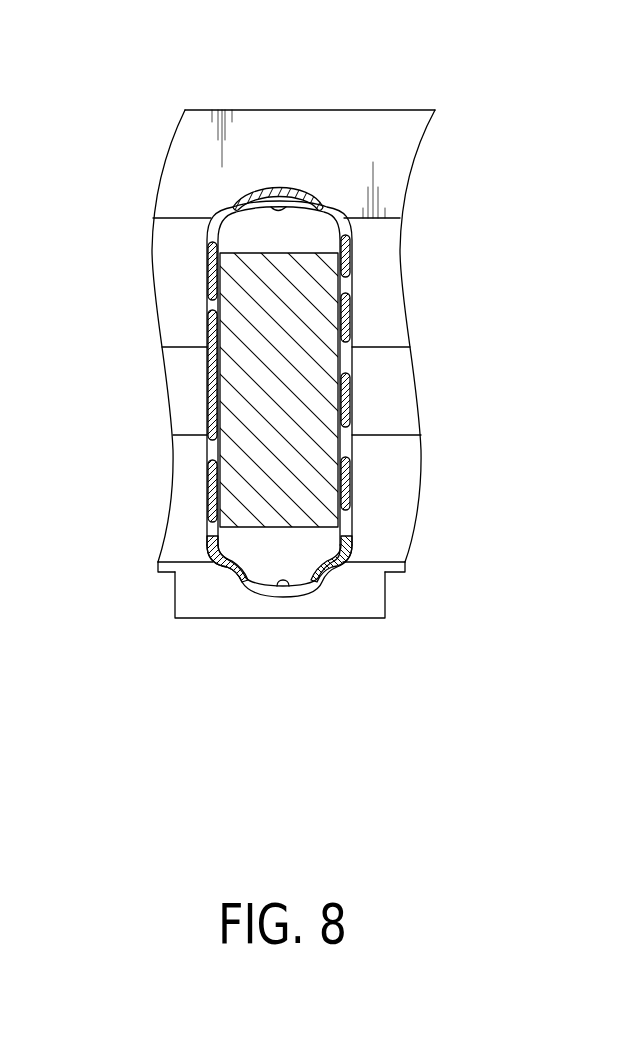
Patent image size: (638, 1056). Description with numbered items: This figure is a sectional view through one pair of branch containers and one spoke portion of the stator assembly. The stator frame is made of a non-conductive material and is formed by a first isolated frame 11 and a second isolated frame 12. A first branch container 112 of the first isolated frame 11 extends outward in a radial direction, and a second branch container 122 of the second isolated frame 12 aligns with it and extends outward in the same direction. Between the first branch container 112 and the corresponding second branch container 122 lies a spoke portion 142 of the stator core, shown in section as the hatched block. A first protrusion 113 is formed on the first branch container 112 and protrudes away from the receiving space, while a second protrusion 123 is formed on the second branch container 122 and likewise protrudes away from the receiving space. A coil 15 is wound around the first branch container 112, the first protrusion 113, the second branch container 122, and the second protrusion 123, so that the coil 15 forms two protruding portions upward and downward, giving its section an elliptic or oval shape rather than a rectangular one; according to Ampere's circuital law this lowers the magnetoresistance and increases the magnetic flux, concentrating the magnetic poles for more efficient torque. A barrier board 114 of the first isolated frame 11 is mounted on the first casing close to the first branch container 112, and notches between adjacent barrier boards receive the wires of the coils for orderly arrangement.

The first isolated frame 11 is at (404, 625).
The second isolated frame 12 is at (118, 66).
The coil 15 is at (350, 396).
The first branch container 112 is at (219, 475).
The first protrusion 113 is at (283, 579).
The barrier board 114 is at (208, 612).
The second branch container 122 is at (349, 286).
The second protrusion 123 is at (293, 205).
The spoke portion 142 is at (219, 305).